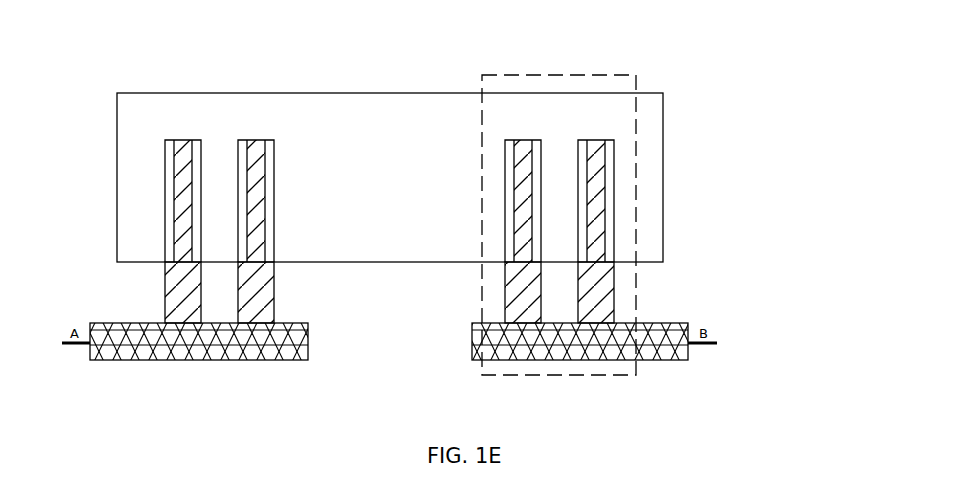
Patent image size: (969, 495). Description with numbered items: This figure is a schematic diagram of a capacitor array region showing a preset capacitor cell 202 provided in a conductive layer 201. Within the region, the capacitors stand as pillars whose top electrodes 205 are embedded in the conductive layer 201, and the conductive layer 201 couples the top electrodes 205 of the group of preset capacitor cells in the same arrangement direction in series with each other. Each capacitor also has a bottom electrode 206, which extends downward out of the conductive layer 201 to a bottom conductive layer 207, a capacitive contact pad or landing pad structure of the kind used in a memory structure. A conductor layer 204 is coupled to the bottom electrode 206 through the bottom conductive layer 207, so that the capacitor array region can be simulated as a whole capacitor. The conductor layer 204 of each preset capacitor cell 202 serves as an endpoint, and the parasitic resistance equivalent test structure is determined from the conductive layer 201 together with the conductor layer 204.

The conductive layer 201 is at (652, 125).
The preset capacitor cell 202 is at (592, 75).
The conductor layer 204 is at (695, 343).
The top electrode 205 is at (613, 195).
The bottom electrode 206 is at (598, 238).
The bottom conductive layer 207 is at (642, 332).